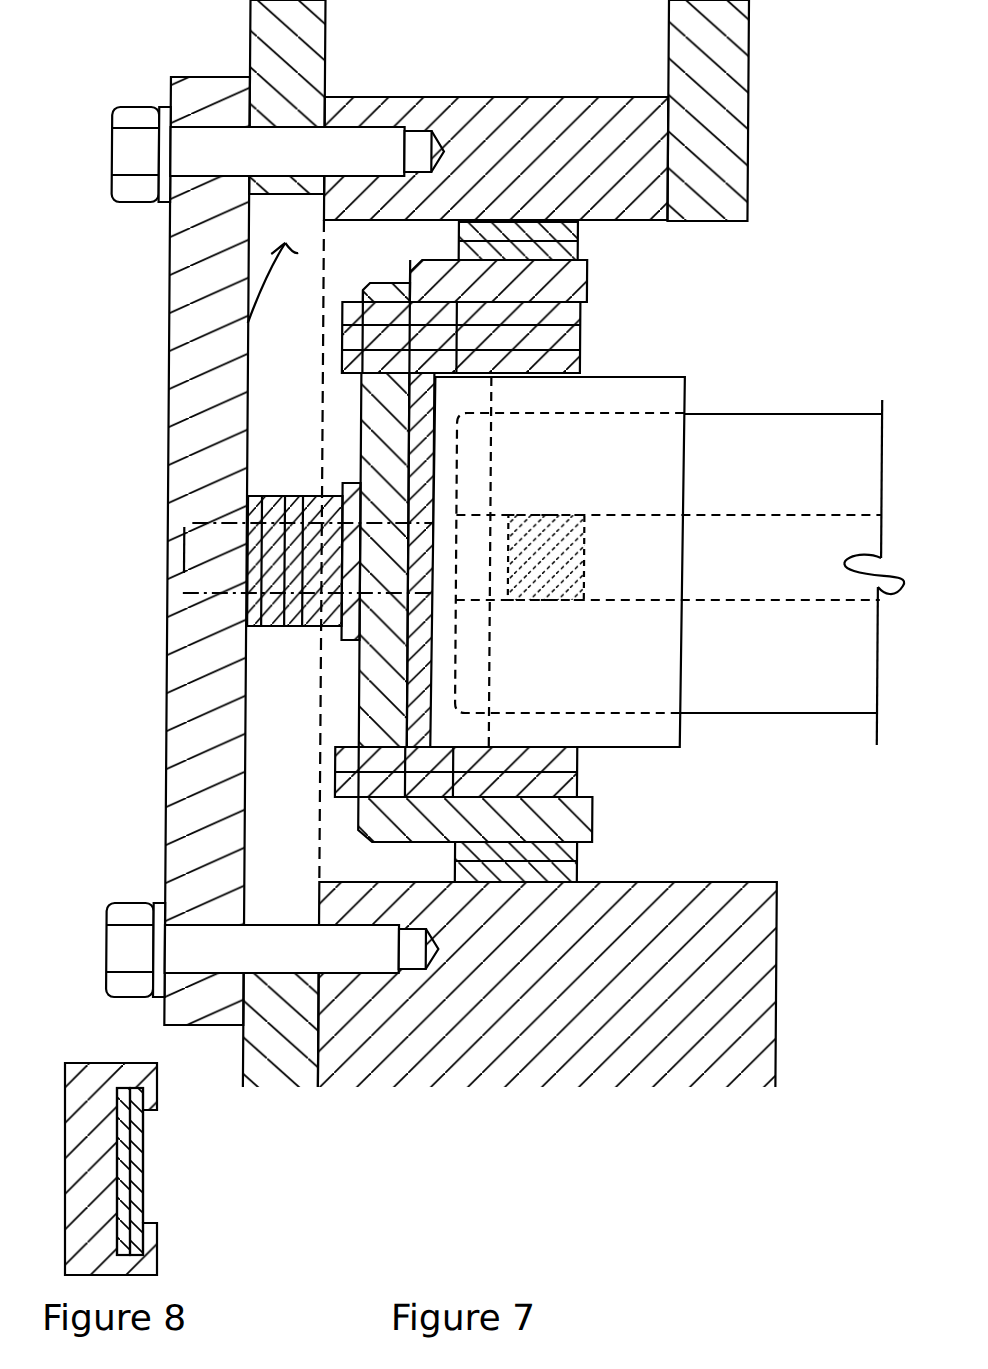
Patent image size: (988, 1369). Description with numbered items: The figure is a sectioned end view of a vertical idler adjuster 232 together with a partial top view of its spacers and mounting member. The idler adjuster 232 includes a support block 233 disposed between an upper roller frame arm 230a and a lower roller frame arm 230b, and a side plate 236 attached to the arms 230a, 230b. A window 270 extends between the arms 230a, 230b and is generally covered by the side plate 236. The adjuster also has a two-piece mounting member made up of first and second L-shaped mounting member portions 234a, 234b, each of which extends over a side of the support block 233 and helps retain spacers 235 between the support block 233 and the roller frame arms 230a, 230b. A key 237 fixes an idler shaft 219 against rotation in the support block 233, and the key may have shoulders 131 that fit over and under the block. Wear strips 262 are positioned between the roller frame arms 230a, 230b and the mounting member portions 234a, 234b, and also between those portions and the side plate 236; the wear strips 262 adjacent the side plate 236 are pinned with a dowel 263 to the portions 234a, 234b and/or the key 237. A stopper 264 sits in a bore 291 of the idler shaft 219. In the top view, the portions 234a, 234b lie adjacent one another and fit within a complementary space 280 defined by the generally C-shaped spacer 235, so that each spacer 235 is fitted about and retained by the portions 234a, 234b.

In FIG. 7, the shoulders 131 is at (443, 812).
In FIG. 7, the idler shaft 219 is at (757, 453).
In FIG. 7, the upper roller frame arm 230a is at (534, 118).
In FIG. 7, the lower roller frame arm 230b is at (725, 1018).
In FIG. 7, the vertical idler adjuster 232 is at (145, 658).
In FIG. 7, the support block 233 is at (523, 738).
In FIG. 7, the first L-shaped mounting member portion 234a is at (386, 407).
In FIG. 8, the first L-shaped mounting member portion 234a is at (125, 1103).
In FIG. 7, the second L-shaped mounting member portion 234b is at (414, 722).
In FIG. 8, the second L-shaped mounting member portion 234b is at (136, 1113).
In FIG. 7, the spacers 235 is at (565, 782).
In FIG. 8, the spacers 235 is at (93, 1247).
In FIG. 7, the side plate 236 is at (205, 712).
In FIG. 7, the key 237 is at (474, 392).
In FIG. 7, the wear strips 262 is at (596, 236).
In FIG. 7, the dowel 263 is at (386, 577).
In FIG. 7, the stopper 264 is at (555, 547).
In FIG. 7, the window 270 is at (250, 323).
In FIG. 8, the complementary space 280 is at (148, 1220).
In FIG. 7, the bore 291 is at (824, 602).